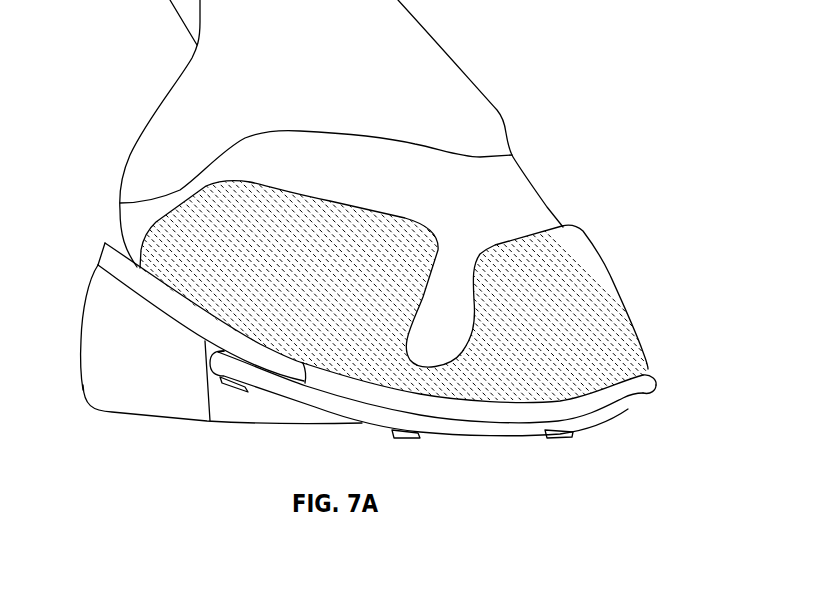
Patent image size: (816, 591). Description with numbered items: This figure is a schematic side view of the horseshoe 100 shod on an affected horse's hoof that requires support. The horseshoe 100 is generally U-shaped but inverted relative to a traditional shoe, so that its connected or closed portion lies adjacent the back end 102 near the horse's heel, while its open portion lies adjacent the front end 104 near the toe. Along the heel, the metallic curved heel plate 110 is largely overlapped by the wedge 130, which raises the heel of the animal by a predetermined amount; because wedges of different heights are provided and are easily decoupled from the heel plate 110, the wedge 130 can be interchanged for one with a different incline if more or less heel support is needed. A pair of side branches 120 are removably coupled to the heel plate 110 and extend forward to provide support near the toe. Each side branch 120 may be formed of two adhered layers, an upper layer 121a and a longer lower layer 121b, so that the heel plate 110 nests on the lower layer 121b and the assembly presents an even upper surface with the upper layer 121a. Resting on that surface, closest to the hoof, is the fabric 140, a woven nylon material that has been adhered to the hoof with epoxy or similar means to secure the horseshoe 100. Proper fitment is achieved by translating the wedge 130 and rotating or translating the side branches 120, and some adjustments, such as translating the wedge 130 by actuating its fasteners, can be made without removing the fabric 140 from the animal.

The horseshoe 100 is at (362, 376).
The back end 102 is at (68, 403).
The front end 104 is at (697, 338).
The heel plate 110 is at (110, 249).
The side branches 120 is at (512, 422).
The upper layer 121a is at (645, 364).
The lower layer 121b is at (617, 406).
The wedge 130 is at (135, 403).
The fabric 140 is at (603, 320).